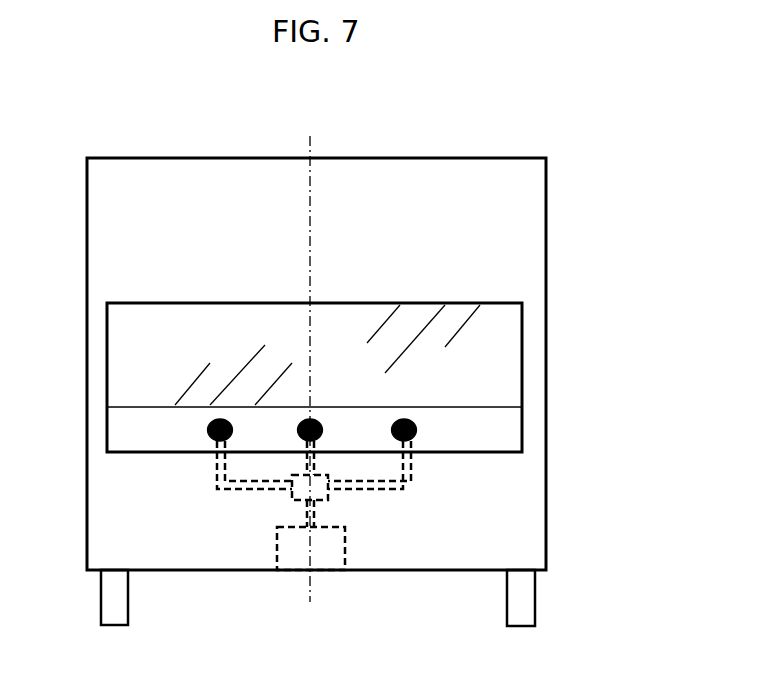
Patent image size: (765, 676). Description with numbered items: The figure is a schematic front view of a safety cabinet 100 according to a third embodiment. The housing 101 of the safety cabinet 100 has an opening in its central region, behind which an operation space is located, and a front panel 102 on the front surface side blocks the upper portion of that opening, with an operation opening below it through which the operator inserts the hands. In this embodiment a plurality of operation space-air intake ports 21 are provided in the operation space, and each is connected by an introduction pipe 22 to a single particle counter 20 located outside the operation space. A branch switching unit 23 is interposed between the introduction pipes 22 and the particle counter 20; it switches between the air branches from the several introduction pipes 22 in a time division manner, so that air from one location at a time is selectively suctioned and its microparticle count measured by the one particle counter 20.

The safety cabinet 100 is at (136, 147).
The housing 101 is at (484, 157).
The front panel 102 is at (490, 318).
The operation space-air intake port 21 is at (158, 420).
The introduction pipe 22 is at (216, 489).
The branch switching unit 23 is at (328, 493).
The particle counter 20 is at (277, 547).